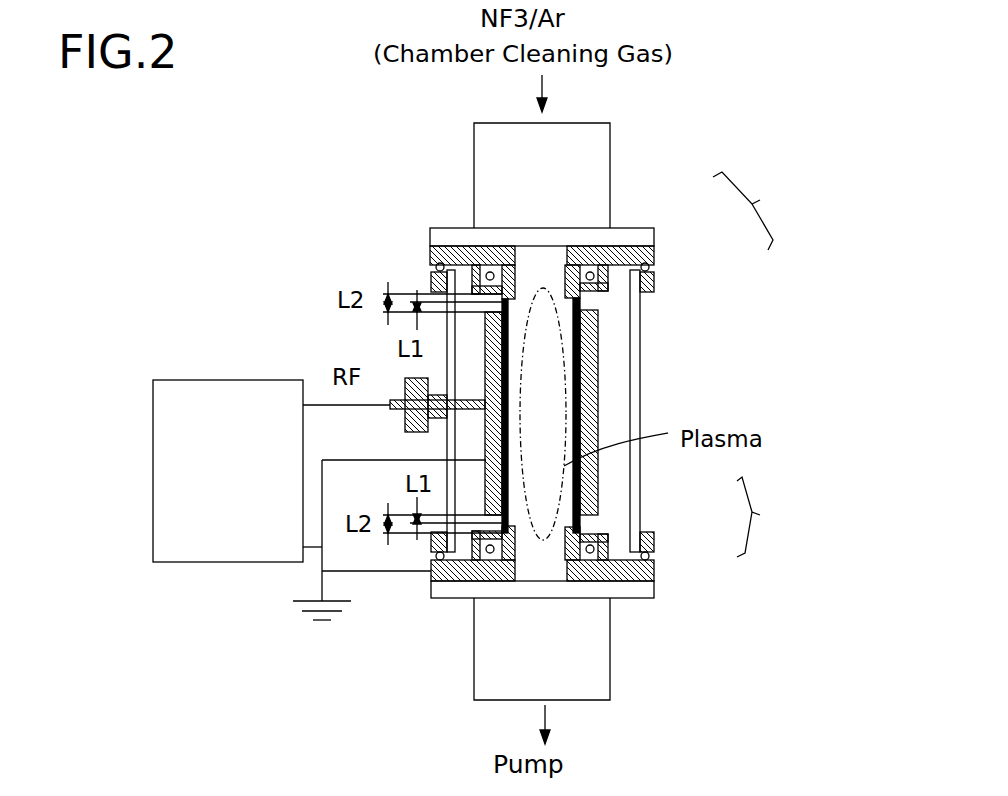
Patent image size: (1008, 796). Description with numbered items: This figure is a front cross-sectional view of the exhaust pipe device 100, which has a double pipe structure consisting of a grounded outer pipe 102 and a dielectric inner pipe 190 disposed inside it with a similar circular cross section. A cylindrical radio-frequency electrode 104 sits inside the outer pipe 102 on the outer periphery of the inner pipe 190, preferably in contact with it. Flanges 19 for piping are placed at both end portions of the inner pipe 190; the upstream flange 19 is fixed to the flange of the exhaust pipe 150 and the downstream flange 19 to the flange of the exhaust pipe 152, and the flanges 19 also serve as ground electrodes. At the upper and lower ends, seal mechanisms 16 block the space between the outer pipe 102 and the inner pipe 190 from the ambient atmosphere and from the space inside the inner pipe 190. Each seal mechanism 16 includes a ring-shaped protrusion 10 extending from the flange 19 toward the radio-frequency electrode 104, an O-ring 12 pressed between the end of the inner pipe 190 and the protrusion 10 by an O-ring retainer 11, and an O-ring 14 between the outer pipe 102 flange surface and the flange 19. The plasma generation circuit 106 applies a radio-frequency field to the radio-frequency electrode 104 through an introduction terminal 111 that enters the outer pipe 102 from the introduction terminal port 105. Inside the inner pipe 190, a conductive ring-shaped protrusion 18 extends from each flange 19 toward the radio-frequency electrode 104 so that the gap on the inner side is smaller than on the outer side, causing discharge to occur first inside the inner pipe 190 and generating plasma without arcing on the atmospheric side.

The exhaust pipe device 100 is at (796, 314).
The outer pipe 102 is at (640, 410).
The radio-frequency electrode 104 is at (598, 376).
The introduction terminal port 105 is at (403, 379).
The plasma generation circuit 106 is at (230, 562).
The protrusion 10 is at (604, 254).
The O-ring retainer 11 is at (595, 273).
The O-ring 12 is at (608, 268).
The O-ring 14 is at (650, 268).
The seal mechanism 16 is at (755, 364).
The protrusion 18 is at (488, 243).
The flange 19 is at (433, 258).
The introduction terminal 111 is at (395, 409).
The exhaust pipe 150 is at (612, 150).
The exhaust pipe 152 is at (612, 656).
The inner pipe 190 is at (598, 323).